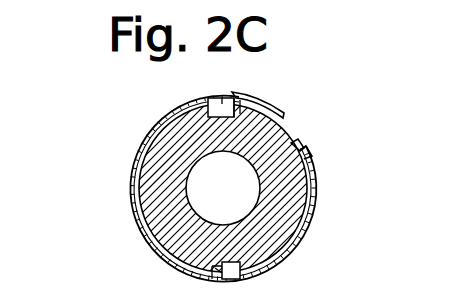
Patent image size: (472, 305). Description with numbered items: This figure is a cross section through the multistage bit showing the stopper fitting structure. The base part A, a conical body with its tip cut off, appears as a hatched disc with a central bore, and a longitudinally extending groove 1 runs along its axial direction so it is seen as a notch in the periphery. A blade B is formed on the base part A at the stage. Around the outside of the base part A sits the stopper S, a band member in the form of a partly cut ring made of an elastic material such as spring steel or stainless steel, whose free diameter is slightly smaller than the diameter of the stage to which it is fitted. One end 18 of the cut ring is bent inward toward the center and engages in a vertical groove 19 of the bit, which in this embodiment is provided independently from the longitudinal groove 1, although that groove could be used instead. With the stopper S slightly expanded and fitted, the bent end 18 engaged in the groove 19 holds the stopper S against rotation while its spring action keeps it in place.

The base part A is at (150, 178).
The stopper S is at (312, 221).
The longitudinally extending groove 1 is at (222, 98).
The blade B is at (244, 93).
The end of the cut ring part 18 is at (305, 145).
The vertical groove 19 is at (297, 146).